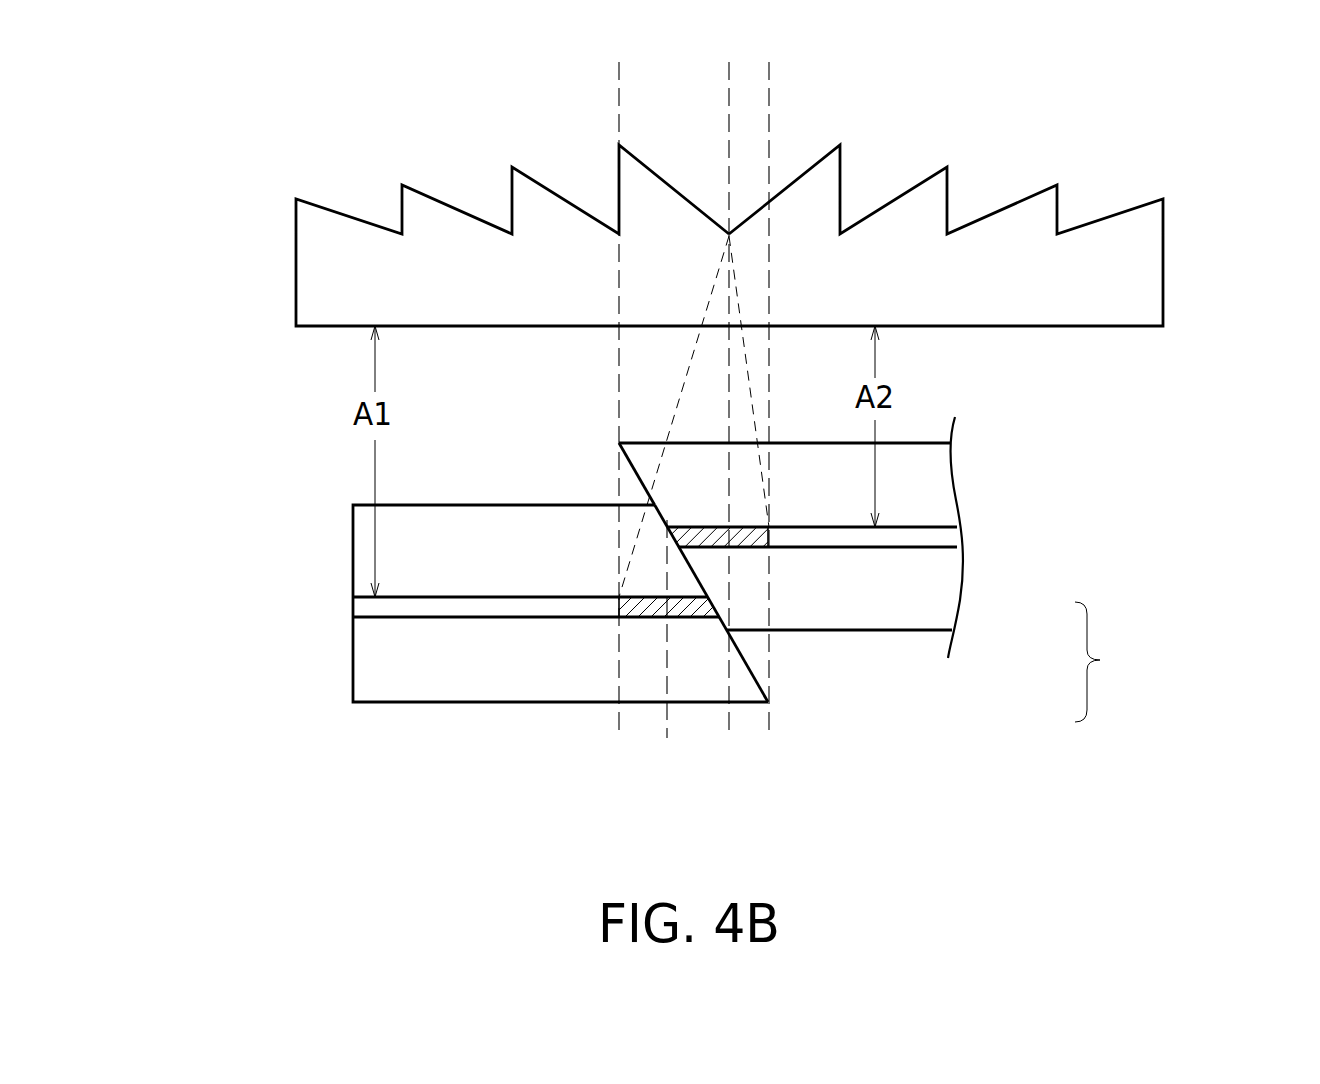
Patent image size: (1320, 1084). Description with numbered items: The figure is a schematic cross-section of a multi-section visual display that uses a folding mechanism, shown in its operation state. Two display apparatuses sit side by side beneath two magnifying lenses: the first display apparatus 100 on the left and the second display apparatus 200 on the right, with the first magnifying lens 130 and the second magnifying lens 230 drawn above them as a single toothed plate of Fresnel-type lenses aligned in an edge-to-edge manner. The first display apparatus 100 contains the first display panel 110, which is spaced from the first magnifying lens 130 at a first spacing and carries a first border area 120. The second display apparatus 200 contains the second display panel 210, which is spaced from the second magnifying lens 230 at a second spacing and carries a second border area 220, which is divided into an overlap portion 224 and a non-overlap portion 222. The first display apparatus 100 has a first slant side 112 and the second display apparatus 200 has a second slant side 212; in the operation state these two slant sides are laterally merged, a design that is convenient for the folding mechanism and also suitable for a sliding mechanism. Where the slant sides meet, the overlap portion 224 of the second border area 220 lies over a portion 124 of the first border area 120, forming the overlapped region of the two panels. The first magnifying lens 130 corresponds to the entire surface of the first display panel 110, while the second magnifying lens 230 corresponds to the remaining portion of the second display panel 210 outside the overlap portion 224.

The first display apparatus 100 is at (318, 550).
The first display panel 110 is at (362, 607).
The first slant side 112 is at (750, 666).
The first border area 120 is at (627, 607).
The portion of the first border area 124 is at (688, 617).
The first magnifying lens 130 is at (497, 292).
The second display apparatus 200 is at (1133, 538).
The second display panel 210 is at (950, 535).
The second slant side 212 is at (636, 473).
The second border area 220 is at (1114, 662).
The non-overlap portion 222 is at (745, 535).
The overlap portion 224 is at (700, 537).
The second magnifying lens 230 is at (1000, 292).